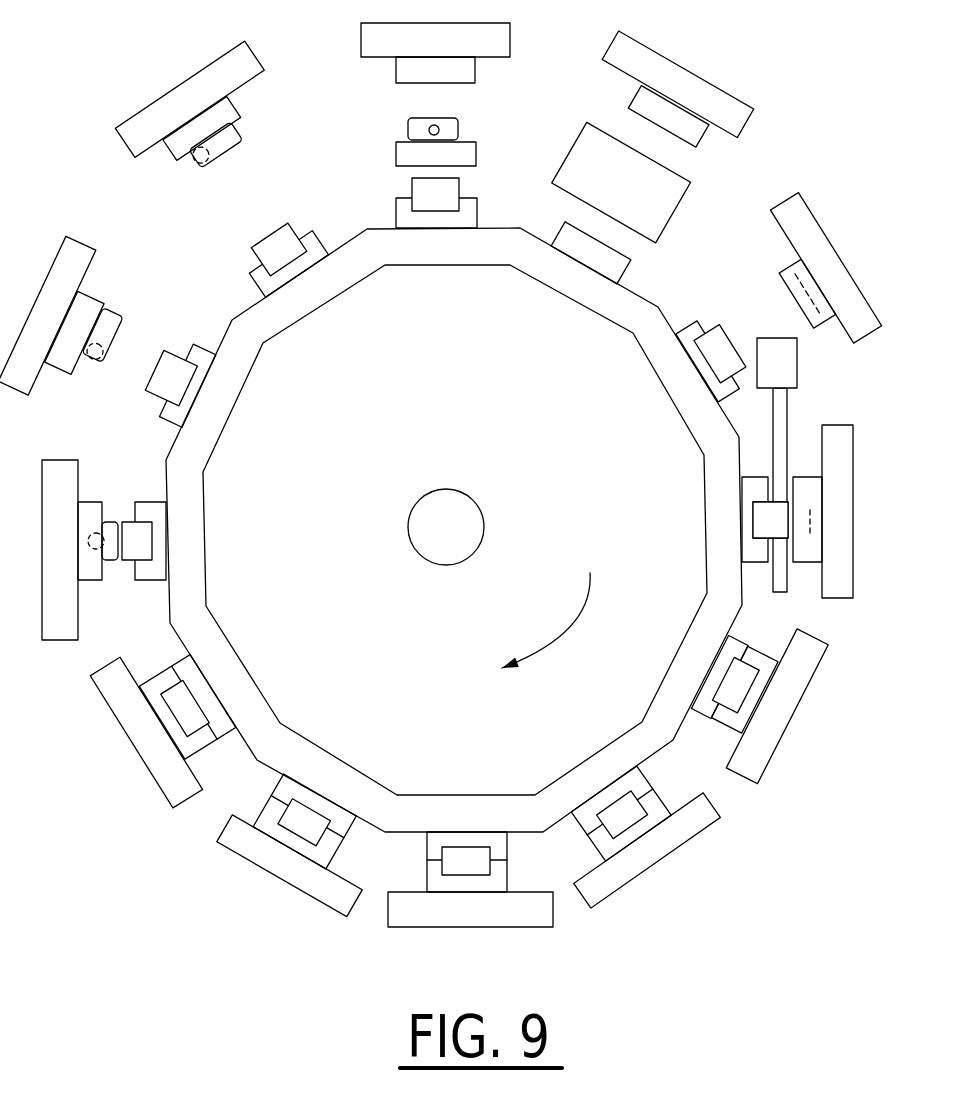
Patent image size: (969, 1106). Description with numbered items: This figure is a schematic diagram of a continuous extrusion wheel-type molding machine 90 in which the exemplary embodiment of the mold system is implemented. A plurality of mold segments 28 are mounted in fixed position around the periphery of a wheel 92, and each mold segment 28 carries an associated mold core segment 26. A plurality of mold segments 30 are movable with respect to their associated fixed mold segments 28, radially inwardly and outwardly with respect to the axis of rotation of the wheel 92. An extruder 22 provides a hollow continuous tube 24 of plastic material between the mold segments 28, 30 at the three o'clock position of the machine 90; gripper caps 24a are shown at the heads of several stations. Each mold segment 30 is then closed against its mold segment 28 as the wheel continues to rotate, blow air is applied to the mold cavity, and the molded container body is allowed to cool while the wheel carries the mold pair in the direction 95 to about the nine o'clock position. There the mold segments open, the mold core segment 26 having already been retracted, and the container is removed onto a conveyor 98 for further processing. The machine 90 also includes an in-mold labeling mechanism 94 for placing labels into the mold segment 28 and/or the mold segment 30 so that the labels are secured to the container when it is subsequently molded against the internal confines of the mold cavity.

The extruder 22 is at (797, 372).
The tube 24 is at (782, 417).
The gripper cap 24a is at (236, 138).
The mold core segment 26 is at (183, 380).
The mold segment 28 is at (702, 365).
The mold segment 30 is at (133, 143).
The continuous extrusion wheel-type molding machine 90 is at (803, 10).
The wheel 92 is at (627, 707).
The in-mold labeling mechanism 94 is at (692, 183).
The direction 95 is at (558, 628).
The conveyor 98 is at (407, 152).